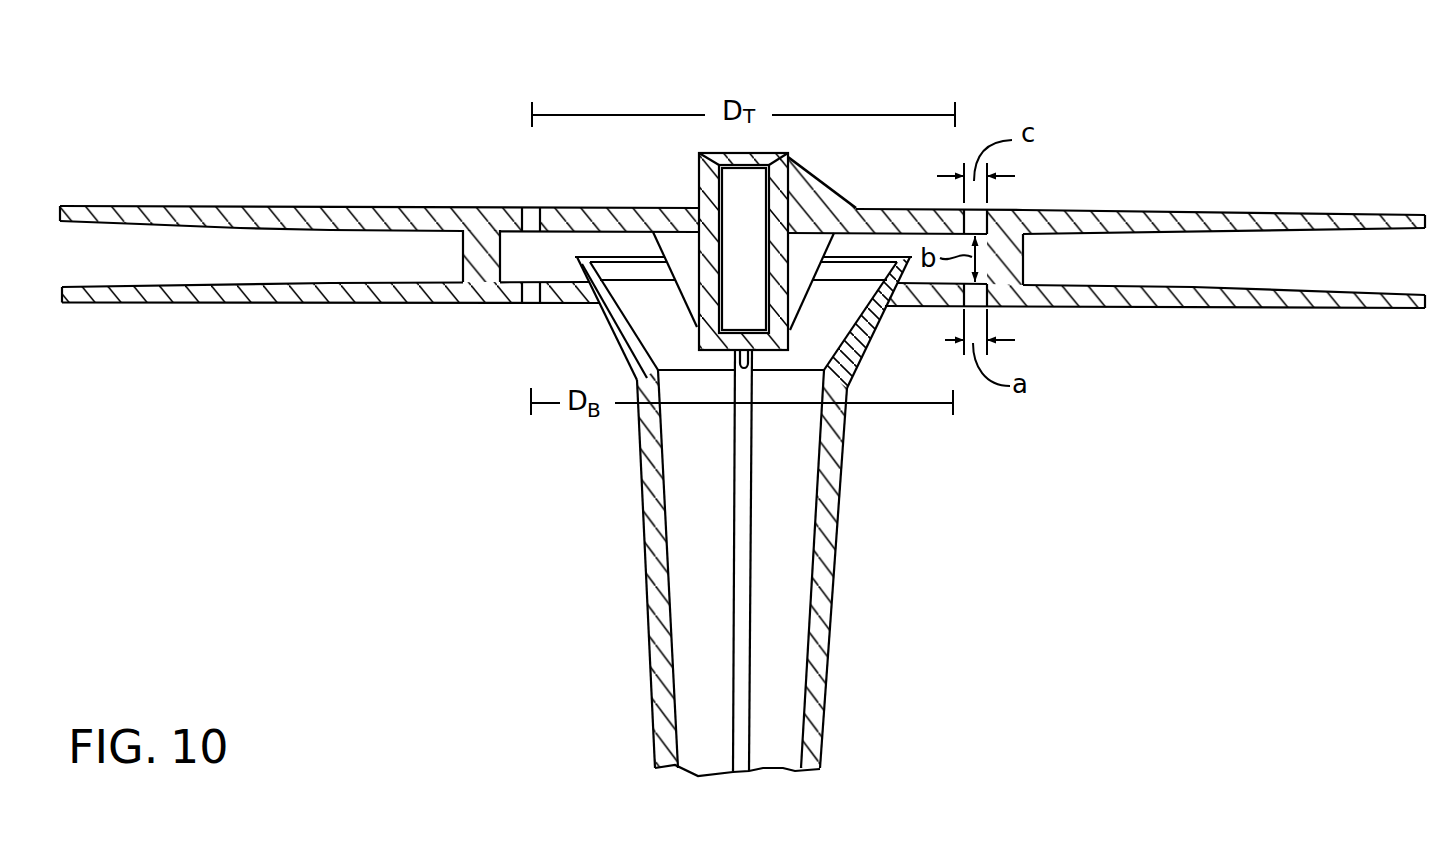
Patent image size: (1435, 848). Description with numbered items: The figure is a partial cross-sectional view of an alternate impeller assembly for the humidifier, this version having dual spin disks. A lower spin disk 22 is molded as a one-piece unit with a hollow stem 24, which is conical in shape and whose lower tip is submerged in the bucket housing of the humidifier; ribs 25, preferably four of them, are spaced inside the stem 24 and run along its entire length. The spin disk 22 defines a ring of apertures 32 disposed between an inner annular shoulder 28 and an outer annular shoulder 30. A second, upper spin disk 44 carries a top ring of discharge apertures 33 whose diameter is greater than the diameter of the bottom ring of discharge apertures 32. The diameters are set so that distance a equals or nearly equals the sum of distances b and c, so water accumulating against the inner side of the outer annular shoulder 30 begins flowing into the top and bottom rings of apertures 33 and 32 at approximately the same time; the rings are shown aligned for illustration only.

The spin disk 22 is at (317, 295).
The hollow stem 24 is at (813, 608).
The ribs 25 is at (737, 532).
The inner annular shoulder 28 is at (900, 263).
The outer annular shoulder 30 is at (1005, 258).
The bottom ring of discharge apertures 32 is at (530, 293).
The top ring of discharge apertures 33 is at (535, 220).
The spin disk 44 is at (335, 212).